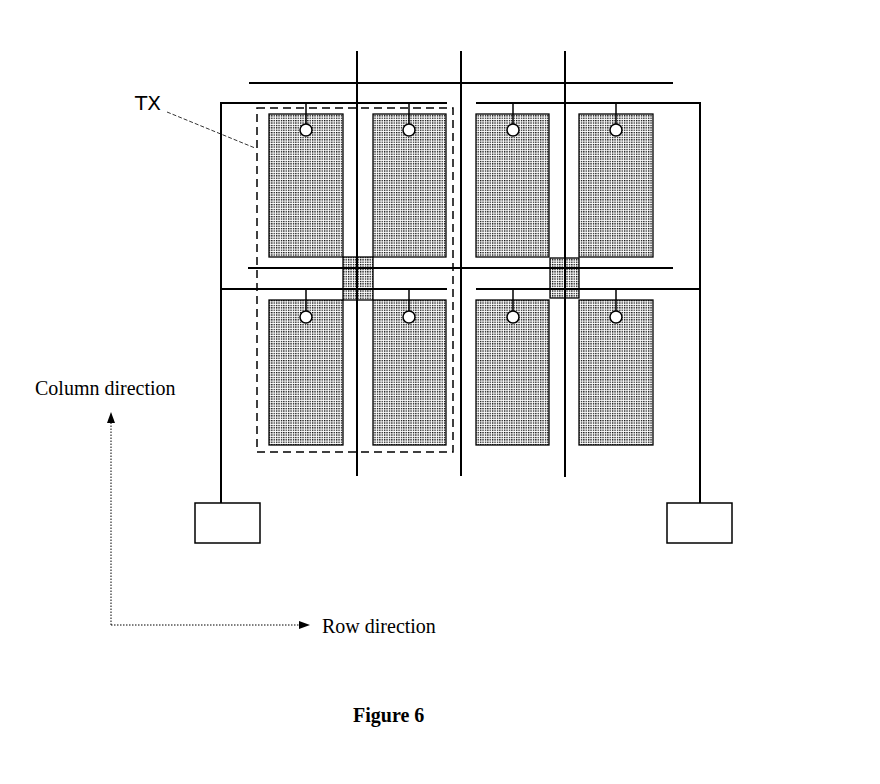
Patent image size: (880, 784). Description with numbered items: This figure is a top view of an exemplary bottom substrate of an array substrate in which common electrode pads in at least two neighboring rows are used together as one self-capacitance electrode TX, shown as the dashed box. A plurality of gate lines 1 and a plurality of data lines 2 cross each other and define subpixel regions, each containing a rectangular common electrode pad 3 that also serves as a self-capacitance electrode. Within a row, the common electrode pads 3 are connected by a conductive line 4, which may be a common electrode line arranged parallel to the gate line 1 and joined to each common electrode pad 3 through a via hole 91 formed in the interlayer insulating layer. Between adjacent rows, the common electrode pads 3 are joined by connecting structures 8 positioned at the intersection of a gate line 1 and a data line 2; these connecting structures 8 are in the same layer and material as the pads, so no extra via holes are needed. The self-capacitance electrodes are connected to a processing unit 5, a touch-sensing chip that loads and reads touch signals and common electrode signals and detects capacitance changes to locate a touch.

The gate line 1 is at (287, 83).
The data line 2 is at (357, 72).
The common electrode pad 3 is at (594, 125).
The conductive line 4 is at (427, 101).
The processing unit 5 is at (722, 503).
The connecting structure 8 is at (579, 277).
The via hole 91 is at (516, 125).